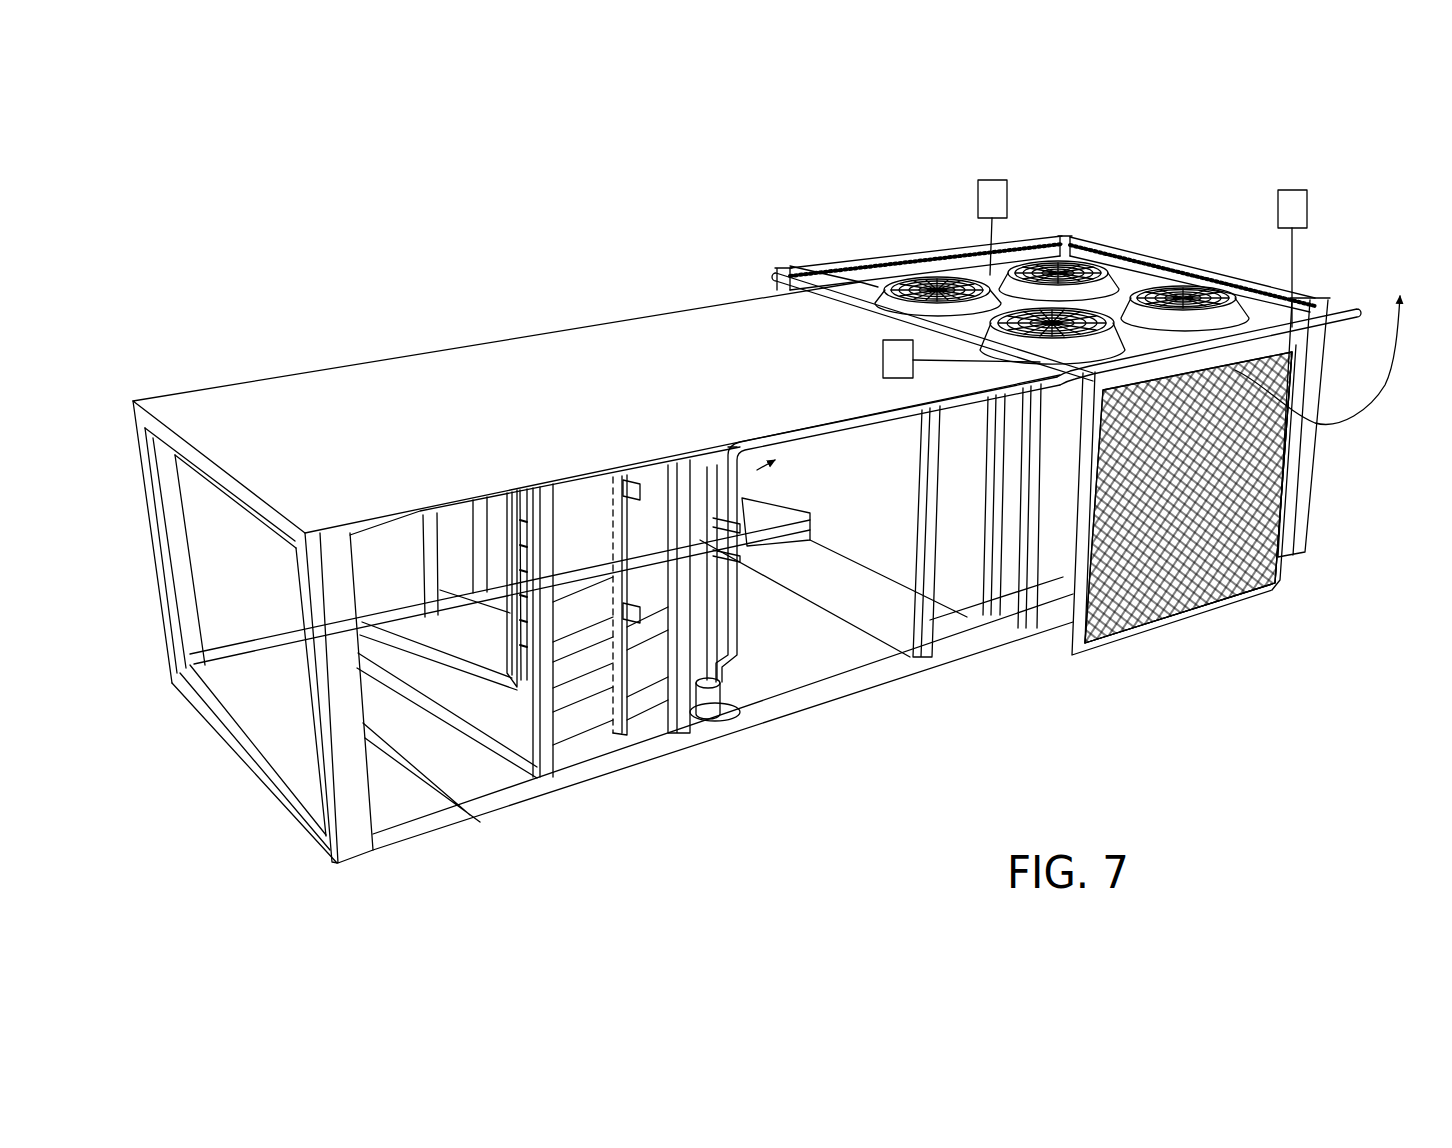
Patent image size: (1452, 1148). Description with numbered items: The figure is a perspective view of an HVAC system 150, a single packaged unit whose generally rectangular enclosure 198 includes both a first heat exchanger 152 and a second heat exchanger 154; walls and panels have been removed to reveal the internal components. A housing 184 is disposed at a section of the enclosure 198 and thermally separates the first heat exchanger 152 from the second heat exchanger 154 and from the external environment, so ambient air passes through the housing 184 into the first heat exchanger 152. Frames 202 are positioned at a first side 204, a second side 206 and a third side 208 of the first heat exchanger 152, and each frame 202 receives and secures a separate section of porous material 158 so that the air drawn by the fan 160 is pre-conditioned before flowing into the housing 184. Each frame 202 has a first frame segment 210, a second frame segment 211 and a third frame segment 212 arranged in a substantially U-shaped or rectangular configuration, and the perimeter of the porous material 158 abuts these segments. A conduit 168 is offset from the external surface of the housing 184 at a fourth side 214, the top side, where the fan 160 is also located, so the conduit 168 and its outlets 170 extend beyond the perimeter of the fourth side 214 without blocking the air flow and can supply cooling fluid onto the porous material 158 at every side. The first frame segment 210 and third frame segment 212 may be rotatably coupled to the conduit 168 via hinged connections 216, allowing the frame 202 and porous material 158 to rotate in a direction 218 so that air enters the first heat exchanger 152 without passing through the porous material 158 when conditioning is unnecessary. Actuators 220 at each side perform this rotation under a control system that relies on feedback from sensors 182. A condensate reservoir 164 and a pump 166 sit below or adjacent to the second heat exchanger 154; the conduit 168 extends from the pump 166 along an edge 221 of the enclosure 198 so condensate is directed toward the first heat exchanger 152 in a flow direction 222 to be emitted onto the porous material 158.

The HVAC system 150 is at (757, 511).
The first heat exchanger 152 is at (1083, 445).
The second heat exchanger 154 is at (693, 508).
The porous material 158 is at (1125, 625).
The fan 160 is at (935, 280).
The condensate reservoir 164 is at (697, 712).
The pump 166 is at (710, 703).
The conduit 168 is at (740, 662).
The outlets 170 is at (825, 290).
The sensors 182 is at (978, 180).
The housing 184 is at (1320, 575).
The enclosure 198 is at (610, 340).
The frame 202 is at (1095, 682).
The first side 204 is at (1227, 622).
The second side 206 is at (1333, 447).
The third side 208 is at (768, 258).
The first frame segment 210 is at (1075, 620).
The second frame segment 211 is at (1183, 617).
The third frame segment 212 is at (1273, 570).
The fourth side 214 is at (1075, 232).
The hinged connections 216 is at (1095, 378).
The direction 218 is at (1397, 335).
The actuators 220 is at (883, 352).
The edge 221 is at (722, 447).
The flow direction 222 is at (756, 488).